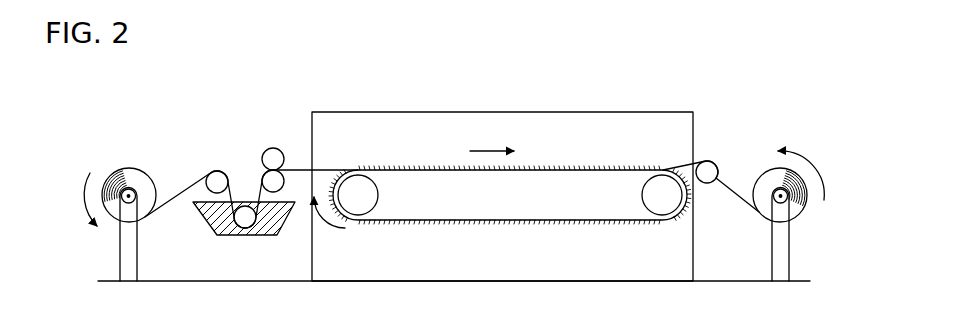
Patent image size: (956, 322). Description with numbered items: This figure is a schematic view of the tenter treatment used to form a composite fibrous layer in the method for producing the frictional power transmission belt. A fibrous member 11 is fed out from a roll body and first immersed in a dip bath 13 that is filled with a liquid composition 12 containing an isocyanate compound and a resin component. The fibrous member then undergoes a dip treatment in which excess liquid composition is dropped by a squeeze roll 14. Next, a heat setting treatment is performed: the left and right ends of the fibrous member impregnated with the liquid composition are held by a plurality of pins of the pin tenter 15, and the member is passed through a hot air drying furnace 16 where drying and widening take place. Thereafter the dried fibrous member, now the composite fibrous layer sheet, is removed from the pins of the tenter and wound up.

The fibrous member 11 is at (181, 184).
The liquid composition 12 is at (214, 213).
The dip bath 13 is at (266, 238).
The squeeze roll 14 is at (266, 141).
The pin tenter 15 is at (415, 223).
The hot air drying furnace 16 is at (520, 109).